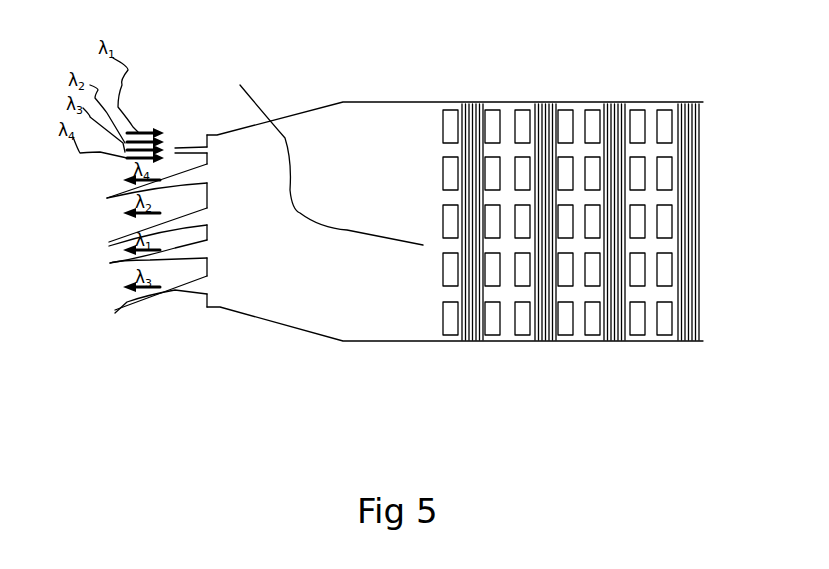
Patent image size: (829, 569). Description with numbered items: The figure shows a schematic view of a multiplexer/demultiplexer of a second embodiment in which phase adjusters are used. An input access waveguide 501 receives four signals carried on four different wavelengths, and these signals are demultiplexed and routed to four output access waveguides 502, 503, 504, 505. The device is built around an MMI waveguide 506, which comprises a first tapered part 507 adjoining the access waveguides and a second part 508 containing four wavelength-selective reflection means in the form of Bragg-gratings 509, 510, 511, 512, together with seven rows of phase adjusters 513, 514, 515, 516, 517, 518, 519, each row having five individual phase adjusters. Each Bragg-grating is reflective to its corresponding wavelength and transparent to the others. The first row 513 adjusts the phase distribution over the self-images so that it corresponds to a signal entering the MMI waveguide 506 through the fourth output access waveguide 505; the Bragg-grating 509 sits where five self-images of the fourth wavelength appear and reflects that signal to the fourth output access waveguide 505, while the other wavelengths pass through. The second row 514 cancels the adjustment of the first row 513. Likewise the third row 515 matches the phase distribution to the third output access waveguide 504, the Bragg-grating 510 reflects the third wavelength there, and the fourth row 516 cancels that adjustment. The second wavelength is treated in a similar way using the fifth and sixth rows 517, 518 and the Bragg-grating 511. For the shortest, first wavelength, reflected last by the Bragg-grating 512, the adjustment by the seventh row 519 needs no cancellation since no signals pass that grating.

The input access waveguide 501 is at (200, 140).
The output access waveguide 502 is at (107, 198).
The output access waveguide 503 is at (109, 246).
The third output access waveguide 504 is at (110, 263).
The fourth output access waveguide 505 is at (115, 313).
The MMI waveguide 506 is at (383, 157).
The first tapered part 507 is at (317, 143).
The second part 508 is at (322, 152).
The Bragg-grating 509 is at (473, 100).
The Bragg-grating 510 is at (543, 100).
The Bragg-grating 511 is at (617, 100).
The Bragg-grating 512 is at (687, 100).
The first row of phase adjusters 513 is at (447, 342).
The second row of phase adjusters 514 is at (492, 342).
The third row of phase adjusters 515 is at (517, 342).
The fourth row of phase adjusters 516 is at (567, 343).
The fifth row of phase adjusters 517 is at (597, 343).
The sixth row of phase adjusters 518 is at (637, 345).
The seventh row of phase adjusters 519 is at (667, 345).